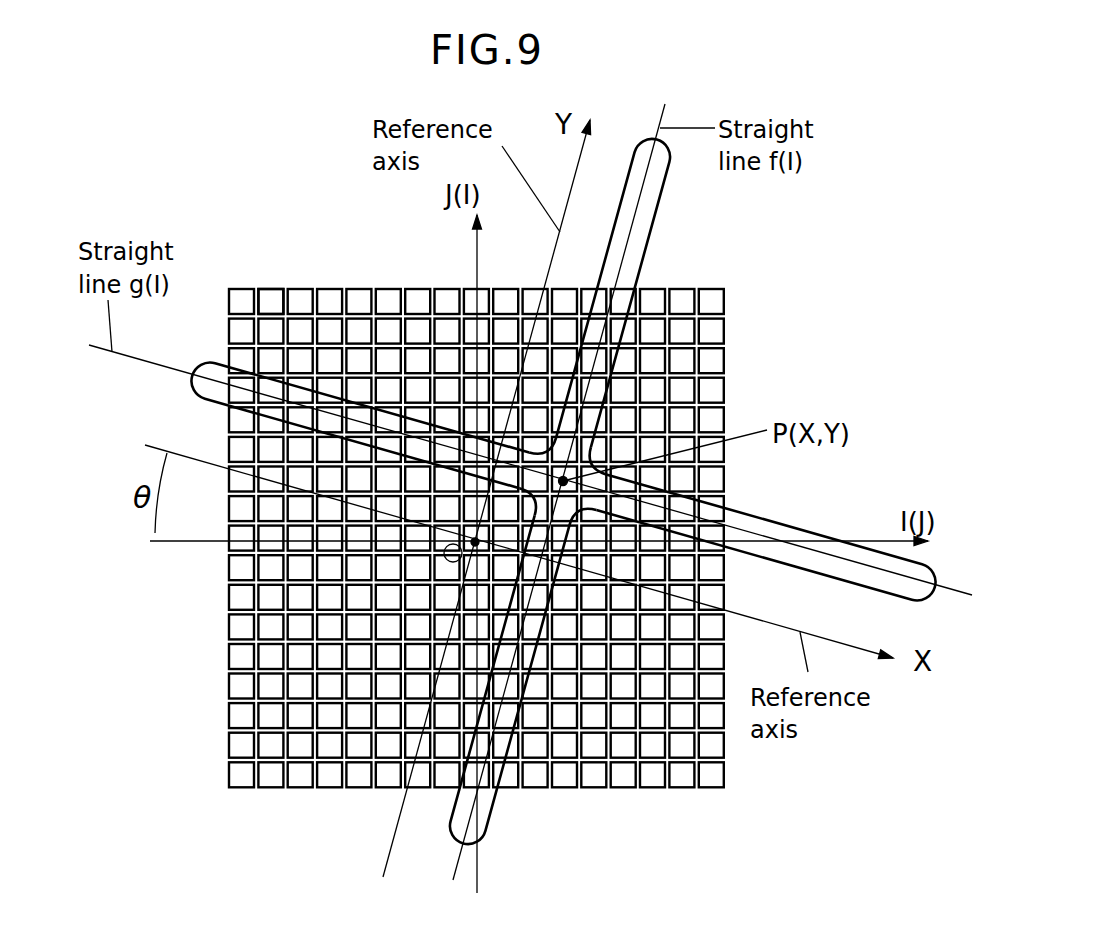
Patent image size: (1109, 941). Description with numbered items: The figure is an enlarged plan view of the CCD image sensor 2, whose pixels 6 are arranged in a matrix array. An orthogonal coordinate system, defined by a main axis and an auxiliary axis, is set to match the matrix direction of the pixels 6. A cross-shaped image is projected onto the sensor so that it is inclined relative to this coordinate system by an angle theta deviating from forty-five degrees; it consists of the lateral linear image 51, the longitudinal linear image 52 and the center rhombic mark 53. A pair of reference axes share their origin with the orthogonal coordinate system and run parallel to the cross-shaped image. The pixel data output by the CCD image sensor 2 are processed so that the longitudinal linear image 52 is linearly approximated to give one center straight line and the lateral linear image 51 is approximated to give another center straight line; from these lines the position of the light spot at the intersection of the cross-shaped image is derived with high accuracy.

The CCD image sensor 2 is at (735, 363).
The pixel 6 is at (272, 300).
The lateral linear image 51 is at (757, 522).
The longitudinal linear image 52 is at (488, 800).
The center rhombic mark 53 is at (607, 463).